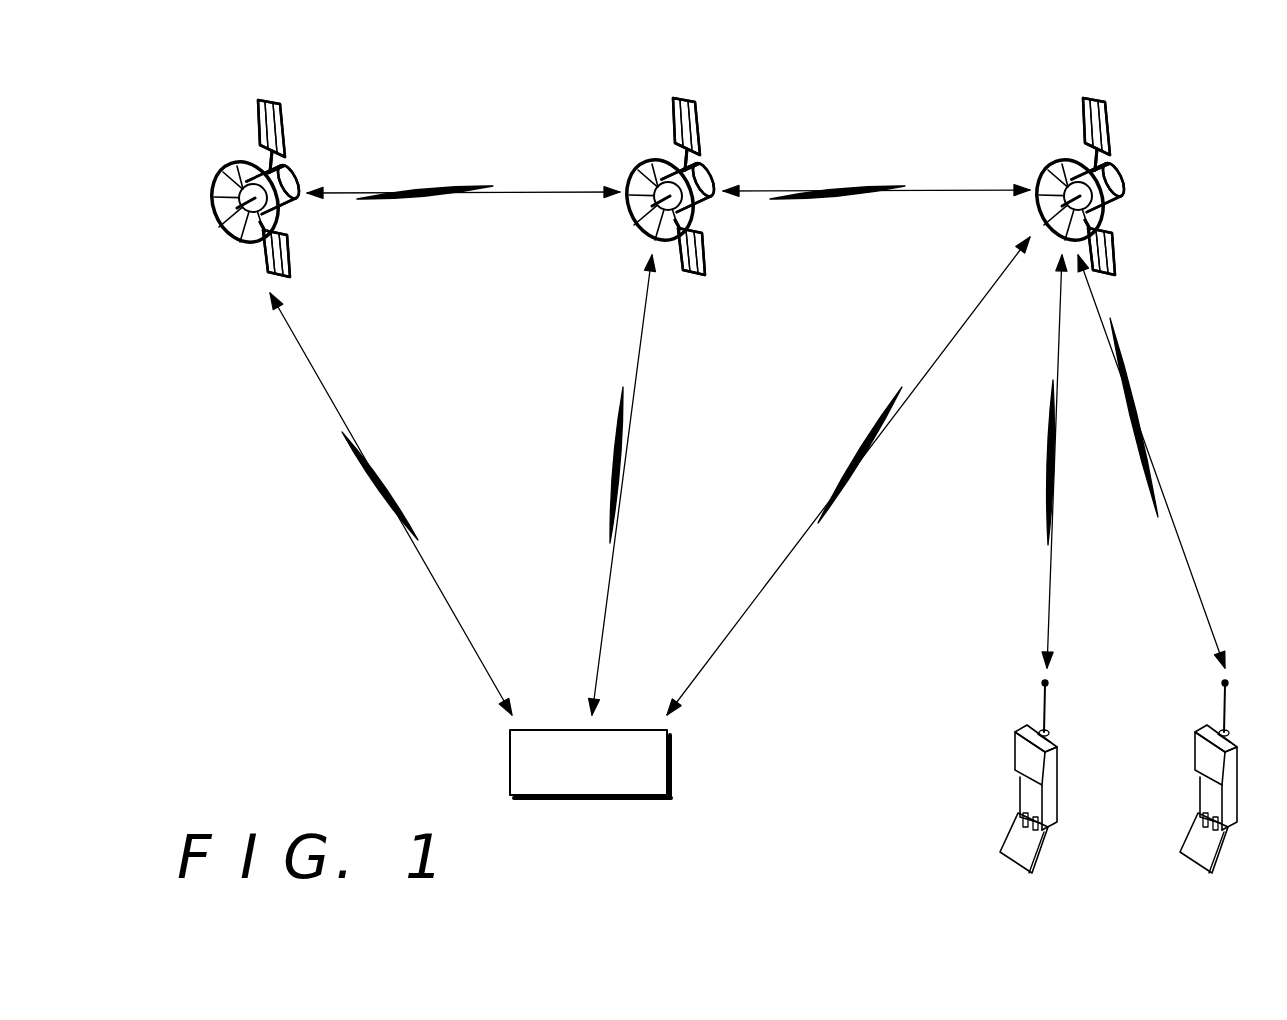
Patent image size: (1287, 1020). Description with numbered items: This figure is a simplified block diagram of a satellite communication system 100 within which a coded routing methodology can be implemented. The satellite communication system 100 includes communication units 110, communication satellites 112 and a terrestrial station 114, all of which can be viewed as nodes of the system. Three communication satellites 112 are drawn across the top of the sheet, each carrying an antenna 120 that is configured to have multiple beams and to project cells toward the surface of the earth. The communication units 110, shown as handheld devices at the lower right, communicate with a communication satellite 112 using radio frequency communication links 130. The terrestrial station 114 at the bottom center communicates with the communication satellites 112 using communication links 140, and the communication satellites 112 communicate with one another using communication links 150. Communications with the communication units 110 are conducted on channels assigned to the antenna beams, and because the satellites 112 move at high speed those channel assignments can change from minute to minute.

The satellite communication system 100 is at (338, 755).
The communication unit 110 is at (1025, 756).
The communication satellite 112 is at (298, 178).
The terrestrial station 114 is at (671, 761).
The antenna 120 is at (244, 240).
The radio frequency communication link 130 is at (1050, 467).
The communication link 140 is at (392, 512).
The communication link 150 is at (425, 188).